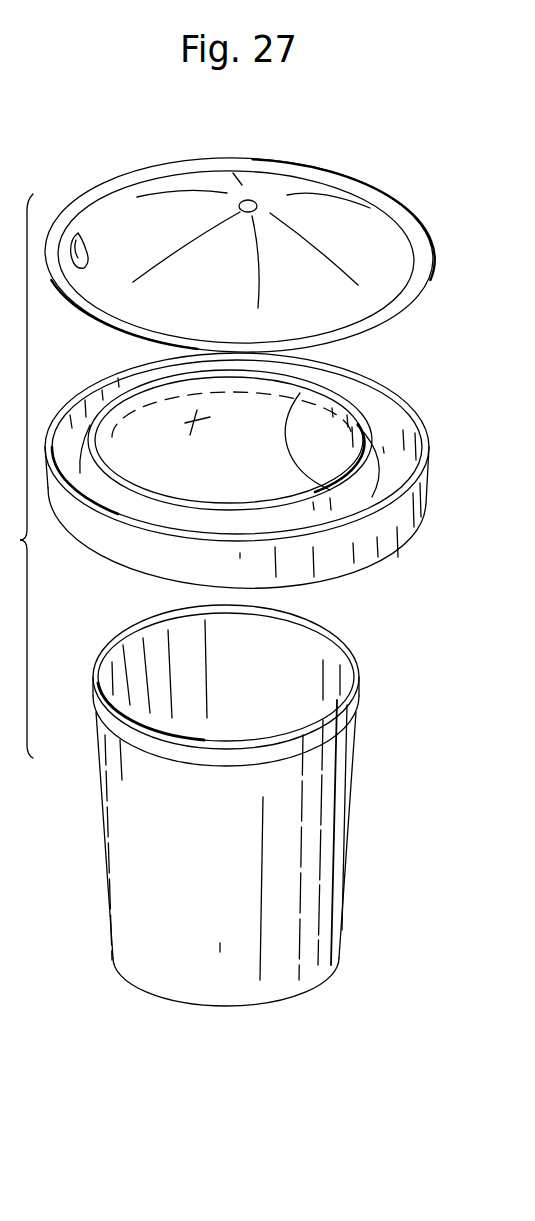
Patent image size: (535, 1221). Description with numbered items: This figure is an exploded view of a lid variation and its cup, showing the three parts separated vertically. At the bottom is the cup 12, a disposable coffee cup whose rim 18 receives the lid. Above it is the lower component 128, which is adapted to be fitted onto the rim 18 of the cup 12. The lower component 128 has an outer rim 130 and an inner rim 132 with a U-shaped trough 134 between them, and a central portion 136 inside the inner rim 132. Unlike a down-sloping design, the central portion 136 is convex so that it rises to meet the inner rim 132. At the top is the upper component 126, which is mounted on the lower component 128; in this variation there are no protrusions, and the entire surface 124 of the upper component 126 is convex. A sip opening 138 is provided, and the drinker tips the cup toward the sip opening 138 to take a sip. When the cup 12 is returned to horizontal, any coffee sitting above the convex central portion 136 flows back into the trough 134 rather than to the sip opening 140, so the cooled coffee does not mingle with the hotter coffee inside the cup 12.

The cup 12 is at (345, 842).
The rim 18 is at (355, 677).
The surface 124 is at (200, 172).
The upper component 126 is at (137, 180).
The lower component 128 is at (65, 400).
The outer rim 130 is at (383, 380).
The inner rim 132 is at (322, 388).
The U-shaped trough 134 is at (393, 420).
The central portion 136 is at (130, 484).
The sip opening 138 is at (82, 232).
The sip opening 140 is at (318, 478).